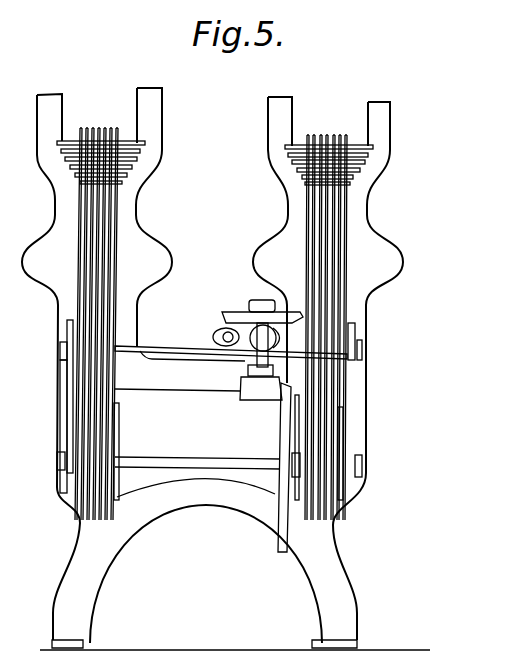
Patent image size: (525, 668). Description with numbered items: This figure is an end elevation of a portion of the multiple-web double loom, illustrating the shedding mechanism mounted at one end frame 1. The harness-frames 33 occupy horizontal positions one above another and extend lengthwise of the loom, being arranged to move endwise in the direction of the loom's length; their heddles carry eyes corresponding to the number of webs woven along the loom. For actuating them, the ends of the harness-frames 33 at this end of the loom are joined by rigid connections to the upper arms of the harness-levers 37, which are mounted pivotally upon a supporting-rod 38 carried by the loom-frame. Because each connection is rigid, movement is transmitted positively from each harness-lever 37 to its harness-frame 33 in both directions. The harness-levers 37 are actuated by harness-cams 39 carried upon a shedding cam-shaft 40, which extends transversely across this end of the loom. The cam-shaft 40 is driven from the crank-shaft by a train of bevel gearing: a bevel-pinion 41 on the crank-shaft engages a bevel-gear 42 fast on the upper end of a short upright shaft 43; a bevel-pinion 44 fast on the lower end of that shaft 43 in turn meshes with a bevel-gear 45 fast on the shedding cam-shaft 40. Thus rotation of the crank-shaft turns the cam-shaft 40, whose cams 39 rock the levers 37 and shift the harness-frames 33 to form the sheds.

The end frame 1 is at (355, 580).
The harness-frame 33 is at (127, 140).
The harness-lever 37 is at (78, 211).
The supporting-rod 38 is at (166, 345).
The harness-cam 39 is at (122, 435).
The shedding cam-shaft 40 is at (164, 471).
The bevel-pinion 41 is at (279, 341).
The bevel-gear 42 is at (236, 285).
The short upright shaft 43 is at (256, 353).
The bevel-pinion 44 is at (257, 389).
The bevel-gear 45 is at (278, 432).